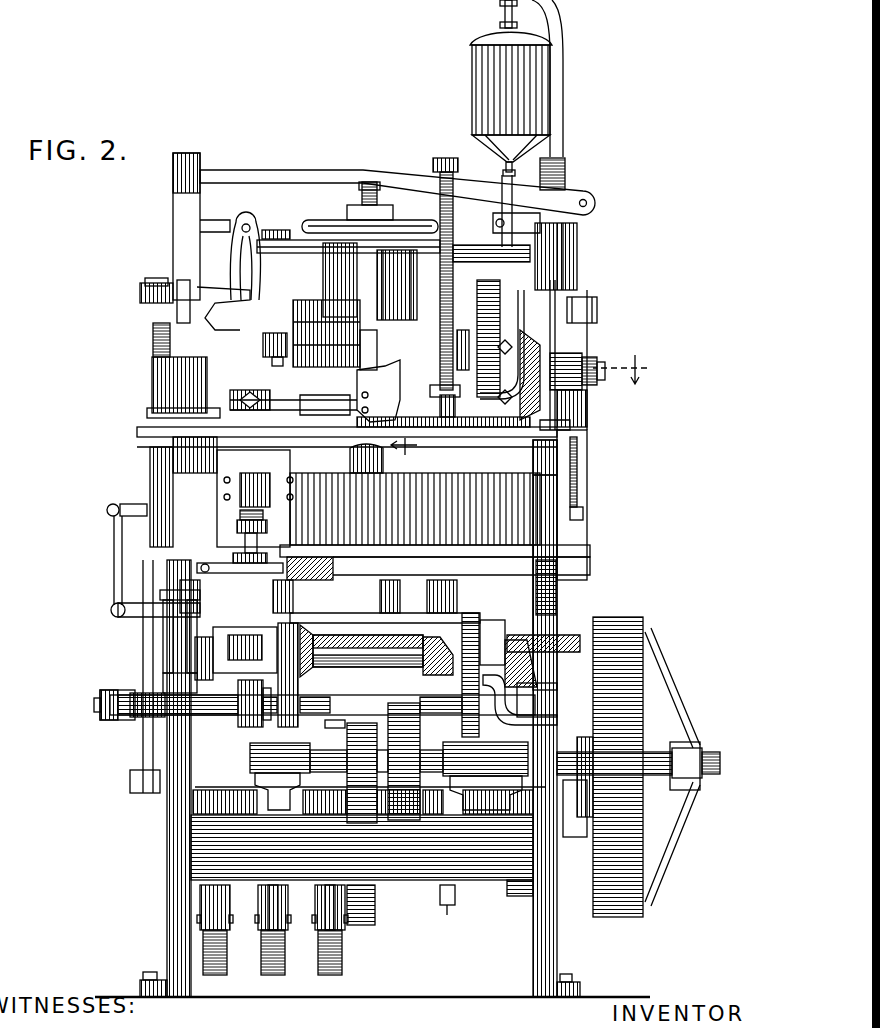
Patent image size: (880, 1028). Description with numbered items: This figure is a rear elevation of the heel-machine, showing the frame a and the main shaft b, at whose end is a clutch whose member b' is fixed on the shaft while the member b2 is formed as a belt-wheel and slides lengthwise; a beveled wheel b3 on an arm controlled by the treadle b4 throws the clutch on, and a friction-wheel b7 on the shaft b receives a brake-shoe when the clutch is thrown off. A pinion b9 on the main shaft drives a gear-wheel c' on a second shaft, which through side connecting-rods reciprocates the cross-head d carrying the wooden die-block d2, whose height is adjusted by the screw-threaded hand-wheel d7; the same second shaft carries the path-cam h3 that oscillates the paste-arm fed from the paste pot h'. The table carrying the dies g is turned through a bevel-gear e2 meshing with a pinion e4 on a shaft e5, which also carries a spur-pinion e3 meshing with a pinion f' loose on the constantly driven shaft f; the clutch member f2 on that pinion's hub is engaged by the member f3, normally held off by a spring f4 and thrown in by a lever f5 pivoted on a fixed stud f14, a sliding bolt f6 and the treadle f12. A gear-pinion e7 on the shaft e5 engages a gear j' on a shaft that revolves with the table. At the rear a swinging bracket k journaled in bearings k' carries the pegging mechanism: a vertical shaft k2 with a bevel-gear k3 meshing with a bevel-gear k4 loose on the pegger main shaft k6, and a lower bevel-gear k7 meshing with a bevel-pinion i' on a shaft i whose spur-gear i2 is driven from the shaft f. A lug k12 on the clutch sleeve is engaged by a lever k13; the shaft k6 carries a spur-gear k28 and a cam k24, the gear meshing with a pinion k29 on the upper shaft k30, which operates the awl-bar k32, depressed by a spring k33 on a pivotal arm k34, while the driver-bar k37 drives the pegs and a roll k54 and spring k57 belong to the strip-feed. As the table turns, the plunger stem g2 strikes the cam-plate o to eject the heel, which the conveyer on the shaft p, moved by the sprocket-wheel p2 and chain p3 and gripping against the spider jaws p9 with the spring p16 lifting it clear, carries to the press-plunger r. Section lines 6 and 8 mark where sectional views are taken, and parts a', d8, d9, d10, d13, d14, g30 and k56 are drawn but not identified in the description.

The frame a is at (347, 643).
The main shaft a' is at (485, 776).
The main shaft b is at (368, 826).
The clutch member b' is at (676, 767).
The belt-wheel clutch member b2 is at (622, 643).
The beveled wheel b3 is at (593, 790).
The treadle b4 is at (335, 932).
The friction-wheel b7 is at (404, 761).
The pinion b9 is at (366, 727).
The gear-wheel c' is at (373, 907).
The cross-head d is at (285, 263).
The die-block d2 is at (300, 371).
The hand-wheel d7 is at (312, 228).
The block d8 is at (265, 340).
The stud d9 is at (272, 359).
The rack d10 is at (277, 230).
The link d13 is at (244, 222).
The rocker arm d14 is at (213, 232).
The bevel-gear e2 is at (400, 637).
The spur-pinion e3 is at (287, 643).
The pinion e4 is at (340, 667).
The shaft e5 is at (417, 663).
The gear-pinion e7 is at (195, 670).
The shaft f is at (361, 694).
The pinion f' is at (322, 720).
The claw-clutch member f2 is at (266, 728).
The claw-clutch member f3 is at (257, 725).
The spring f4 is at (147, 707).
The lever f5 is at (113, 587).
The sliding bolt f6 is at (100, 510).
The treadle f12 is at (213, 910).
The fixed bracket f14 is at (197, 637).
The dies g is at (353, 462).
The plunger stem g2 is at (361, 580).
The rod g30 is at (282, 938).
The paste pot h' is at (492, 123).
The path-cam h3 is at (448, 898).
The shaft i is at (558, 605).
The bevel-pinion i' is at (493, 625).
The spur-gear i2 is at (461, 617).
The gear j' is at (141, 641).
The swinging bracket k is at (551, 326).
The bearings k' is at (583, 345).
The vertical shaft k2 is at (552, 490).
The bevel-gear k3 is at (338, 298).
The bevel-gear k4 is at (542, 338).
The pegger main shaft k6 is at (450, 420).
The bevel-gear k7 is at (525, 640).
The lug k12 is at (590, 357).
The lever k13 is at (567, 390).
The cam k24 is at (460, 330).
The spur-gear k28 is at (587, 323).
The pinion k29 is at (575, 298).
The upper shaft k30 is at (522, 300).
The awl-bar k32 is at (375, 284).
The spring k33 is at (438, 186).
The pivotal arm k34 is at (448, 170).
The driver-bar k37 is at (380, 310).
The roll k54 is at (385, 345).
The plate k56 is at (347, 381).
The spring k57 is at (377, 373).
The cam-plate o is at (303, 560).
The conveyer-shaft p is at (235, 536).
The sprocket-wheel p2 is at (173, 385).
The sprocket-chain p3 is at (235, 556).
The spider jaws p9 is at (150, 302).
The spring p16 is at (157, 342).
The press-plunger r is at (157, 447).
The section line 6— 6 is at (355, 407).
The section line 8— 8 is at (404, 258).